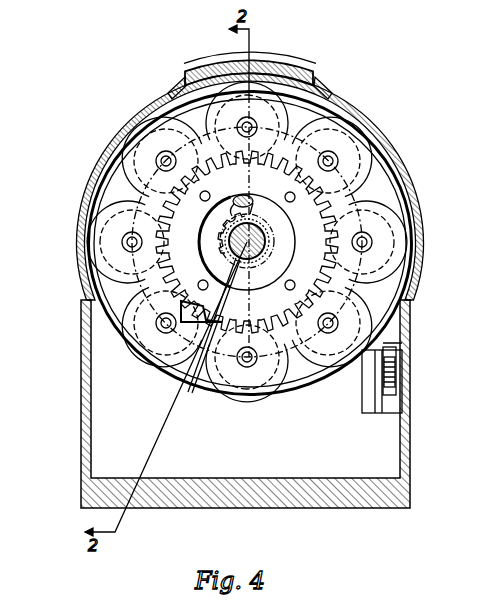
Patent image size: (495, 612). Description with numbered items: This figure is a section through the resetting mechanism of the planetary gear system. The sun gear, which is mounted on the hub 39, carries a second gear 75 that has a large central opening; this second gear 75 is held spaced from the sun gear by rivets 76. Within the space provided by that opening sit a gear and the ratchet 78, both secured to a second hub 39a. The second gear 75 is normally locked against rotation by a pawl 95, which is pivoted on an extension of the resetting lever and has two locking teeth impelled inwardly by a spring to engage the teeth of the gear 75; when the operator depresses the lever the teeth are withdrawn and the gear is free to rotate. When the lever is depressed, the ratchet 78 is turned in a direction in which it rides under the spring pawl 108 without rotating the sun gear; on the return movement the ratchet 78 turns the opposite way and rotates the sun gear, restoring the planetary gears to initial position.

The spring pawl 108 is at (176, 90).
The second gear 75 is at (277, 157).
The rivets 76 is at (293, 283).
The hub 39 is at (233, 247).
The ratchet 78 is at (217, 227).
The pawl 95 is at (195, 322).
The second hub 39a is at (190, 393).